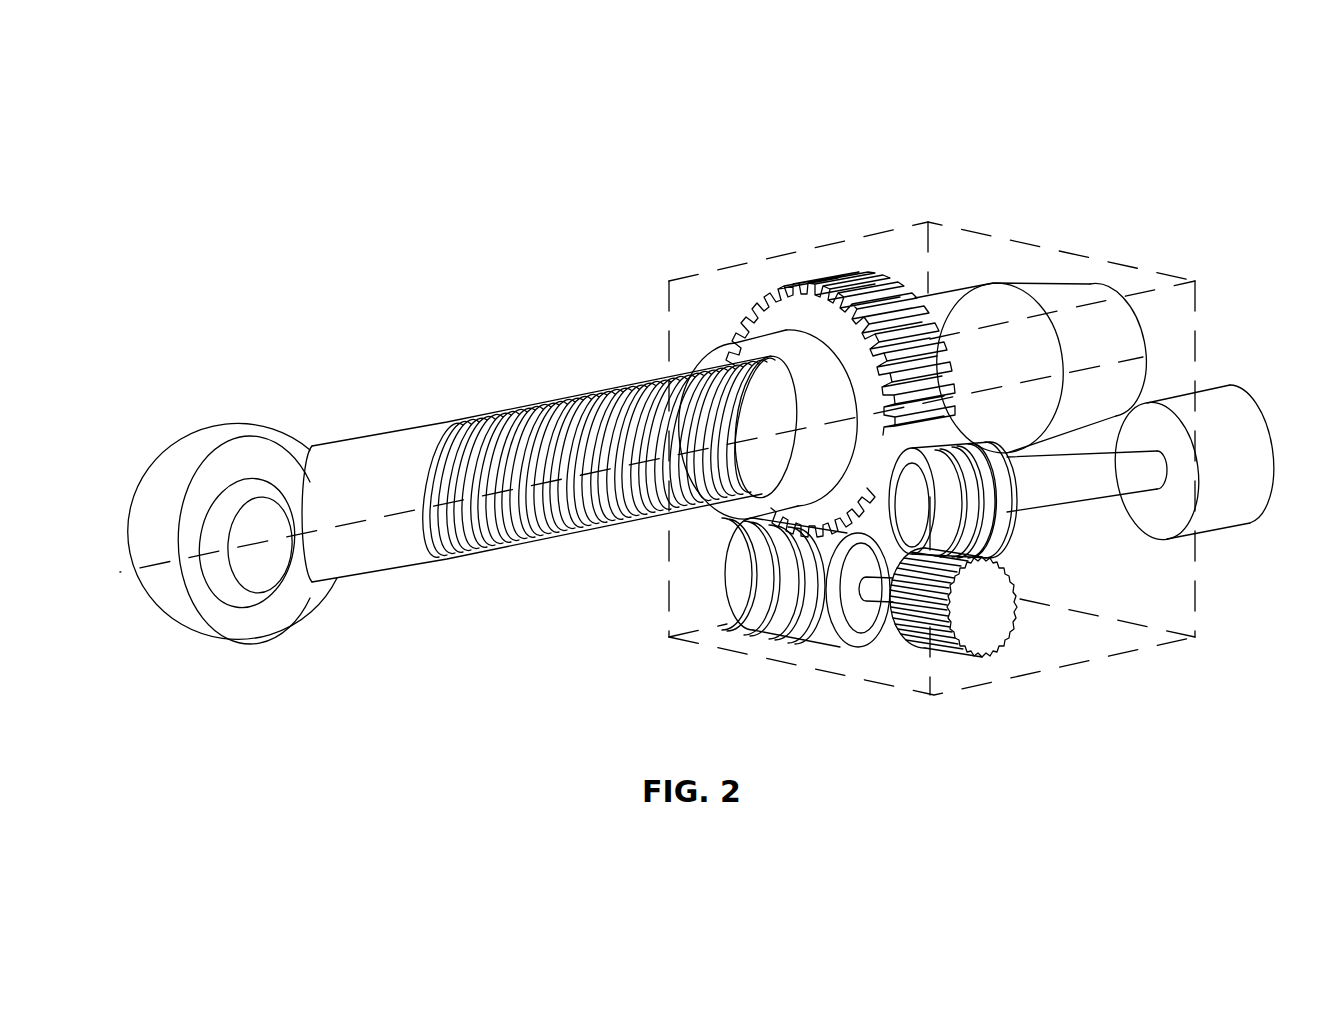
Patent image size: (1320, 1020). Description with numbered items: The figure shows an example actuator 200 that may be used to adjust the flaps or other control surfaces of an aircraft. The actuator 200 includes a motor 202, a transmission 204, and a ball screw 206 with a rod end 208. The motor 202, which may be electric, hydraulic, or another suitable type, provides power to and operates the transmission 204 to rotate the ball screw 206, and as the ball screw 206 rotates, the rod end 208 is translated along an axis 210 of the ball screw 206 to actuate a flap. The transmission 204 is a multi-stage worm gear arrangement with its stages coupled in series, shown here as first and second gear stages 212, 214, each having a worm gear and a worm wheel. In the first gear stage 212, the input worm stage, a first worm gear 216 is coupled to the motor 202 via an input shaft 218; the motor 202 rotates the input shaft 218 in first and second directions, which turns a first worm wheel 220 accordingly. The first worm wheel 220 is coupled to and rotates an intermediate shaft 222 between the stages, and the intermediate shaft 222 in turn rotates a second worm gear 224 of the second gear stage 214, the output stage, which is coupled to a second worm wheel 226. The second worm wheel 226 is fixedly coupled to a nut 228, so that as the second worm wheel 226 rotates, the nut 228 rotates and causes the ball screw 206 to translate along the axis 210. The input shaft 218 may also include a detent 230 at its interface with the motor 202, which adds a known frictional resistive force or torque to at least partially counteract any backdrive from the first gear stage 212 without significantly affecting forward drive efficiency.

The actuator 200 is at (244, 100).
The motor 202 is at (1215, 383).
The transmission 204 is at (873, 234).
The ball screw 206 is at (547, 400).
The rod end 208 is at (222, 643).
The axis 210 is at (463, 557).
The first gear stage 212 is at (1012, 554).
The second gear stage 214 is at (740, 518).
The first worm gear 216 is at (1009, 517).
The input shaft 218 is at (1103, 500).
The first worm wheel 220 is at (984, 654).
The intermediate shaft 222 is at (883, 590).
The second worm gear 224 is at (810, 640).
The second worm wheel 226 is at (792, 290).
The nut 228 is at (980, 283).
The detent 230 is at (1169, 479).